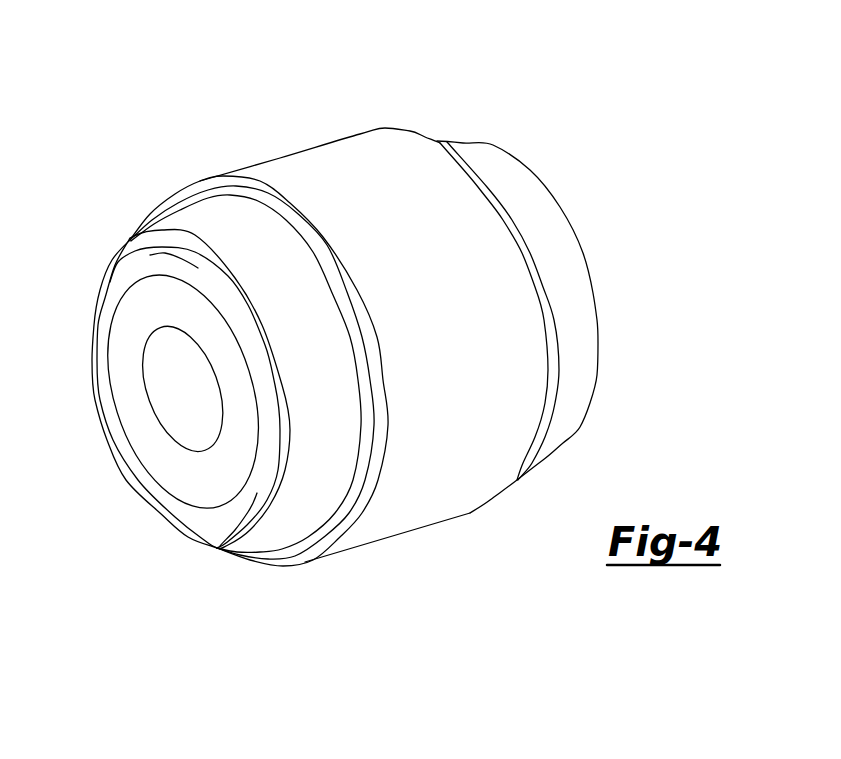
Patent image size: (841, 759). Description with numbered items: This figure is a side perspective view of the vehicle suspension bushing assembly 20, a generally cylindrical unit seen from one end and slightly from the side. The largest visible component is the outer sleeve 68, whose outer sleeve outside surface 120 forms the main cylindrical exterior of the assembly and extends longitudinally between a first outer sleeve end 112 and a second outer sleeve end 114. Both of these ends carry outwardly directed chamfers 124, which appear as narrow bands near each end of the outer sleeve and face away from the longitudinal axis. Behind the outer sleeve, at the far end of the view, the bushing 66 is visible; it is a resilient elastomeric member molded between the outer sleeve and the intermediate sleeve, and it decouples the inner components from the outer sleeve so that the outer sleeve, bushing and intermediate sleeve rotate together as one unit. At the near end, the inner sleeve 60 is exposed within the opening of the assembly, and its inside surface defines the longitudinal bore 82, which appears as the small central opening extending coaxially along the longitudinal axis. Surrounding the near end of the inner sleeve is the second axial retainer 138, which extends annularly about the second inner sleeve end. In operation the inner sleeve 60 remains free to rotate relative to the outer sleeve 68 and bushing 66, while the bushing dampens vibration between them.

The vehicle suspension bushing assembly 20 is at (138, 118).
The inner sleeve 60 is at (187, 478).
The bushing 66 is at (501, 143).
The outer sleeve 68 is at (348, 165).
The longitudinal bore 82 is at (160, 381).
The first outer sleeve end 112 is at (472, 521).
The second outer sleeve end 114 is at (316, 568).
The outer sleeve outside surface 120 is at (286, 144).
The chamfers 124 is at (527, 245).
The second axial retainer 138 is at (118, 289).